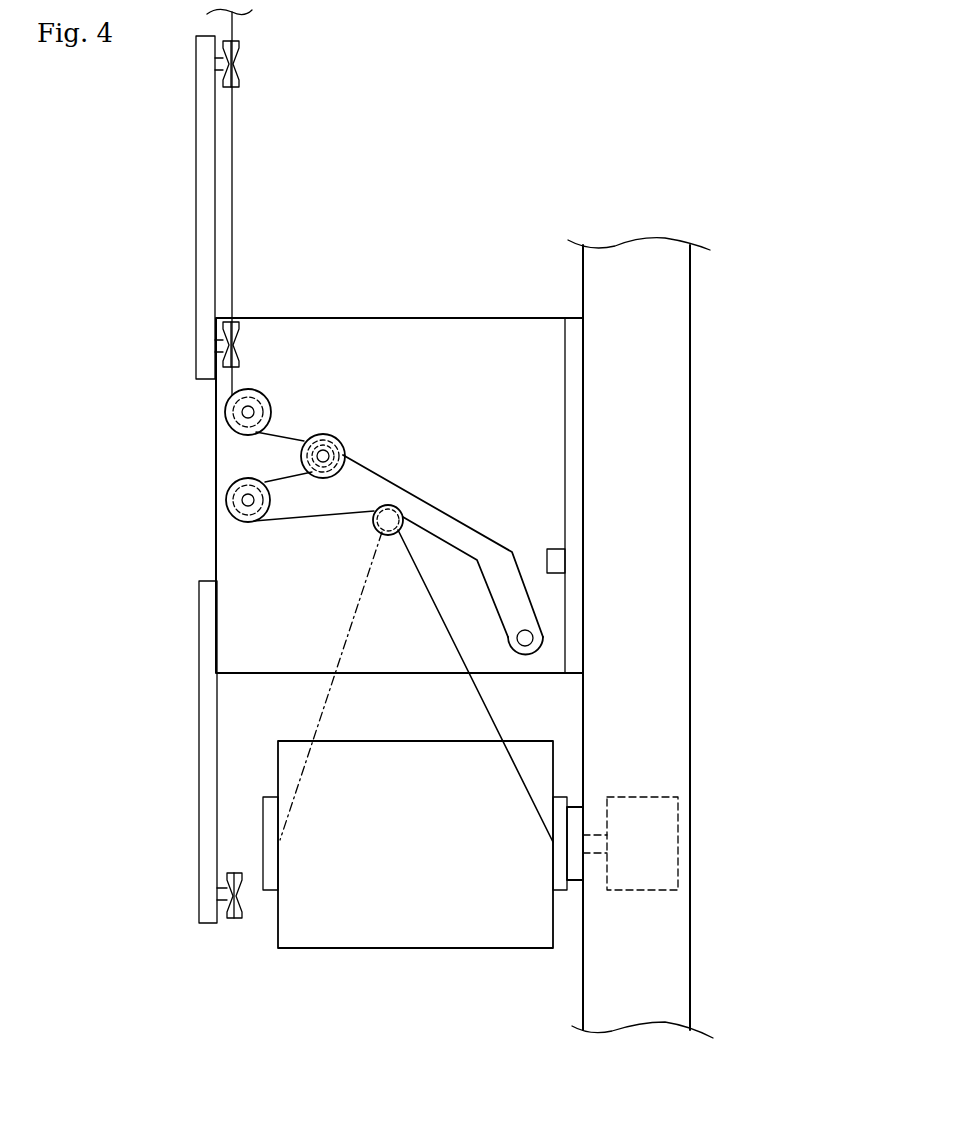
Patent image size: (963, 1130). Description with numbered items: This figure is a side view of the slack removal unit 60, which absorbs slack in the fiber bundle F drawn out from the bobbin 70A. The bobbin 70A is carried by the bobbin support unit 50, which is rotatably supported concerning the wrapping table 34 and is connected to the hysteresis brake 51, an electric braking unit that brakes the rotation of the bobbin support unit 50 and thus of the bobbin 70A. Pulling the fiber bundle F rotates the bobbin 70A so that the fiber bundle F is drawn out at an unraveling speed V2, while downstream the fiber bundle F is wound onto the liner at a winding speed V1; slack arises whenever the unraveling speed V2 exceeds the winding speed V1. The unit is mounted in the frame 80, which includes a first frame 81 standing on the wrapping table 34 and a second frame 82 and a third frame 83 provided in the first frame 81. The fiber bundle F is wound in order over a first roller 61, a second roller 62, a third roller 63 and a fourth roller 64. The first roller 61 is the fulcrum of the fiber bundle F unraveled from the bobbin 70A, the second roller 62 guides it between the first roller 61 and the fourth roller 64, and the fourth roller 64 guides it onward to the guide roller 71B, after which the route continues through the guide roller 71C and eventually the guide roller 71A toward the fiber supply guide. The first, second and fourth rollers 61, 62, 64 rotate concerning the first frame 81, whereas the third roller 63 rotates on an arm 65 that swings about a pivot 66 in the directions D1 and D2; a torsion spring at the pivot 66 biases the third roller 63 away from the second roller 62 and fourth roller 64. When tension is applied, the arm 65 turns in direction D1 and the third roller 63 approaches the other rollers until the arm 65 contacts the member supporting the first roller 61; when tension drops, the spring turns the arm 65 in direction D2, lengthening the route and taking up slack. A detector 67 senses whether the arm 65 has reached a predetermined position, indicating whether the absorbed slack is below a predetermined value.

The wrapping table 34 is at (636, 256).
The bobbin support unit 50 is at (578, 870).
The hysteresis brake 51 is at (640, 880).
The slack removal unit 60 is at (421, 150).
The first roller 61 is at (378, 532).
The second roller 62 is at (225, 500).
The third roller 63 is at (330, 437).
The fourth roller 64 is at (225, 412).
The arm 65 is at (443, 515).
The pivot 66 is at (533, 637).
The detector 67 is at (565, 562).
The bobbin 70A is at (418, 930).
The guide roller 71A is at (238, 920).
The guide roller 71B is at (240, 345).
The guide roller 71C is at (240, 64).
The frame 80 is at (350, 295).
The first frame 81 is at (413, 333).
The second frame 82 is at (199, 735).
The third frame 83 is at (200, 193).
The fiber bundle F is at (233, 178).
The winding speed V1 is at (242, 218).
The unraveling speed V2 is at (466, 633).
The direction D1 is at (450, 420).
The direction D2 is at (445, 411).